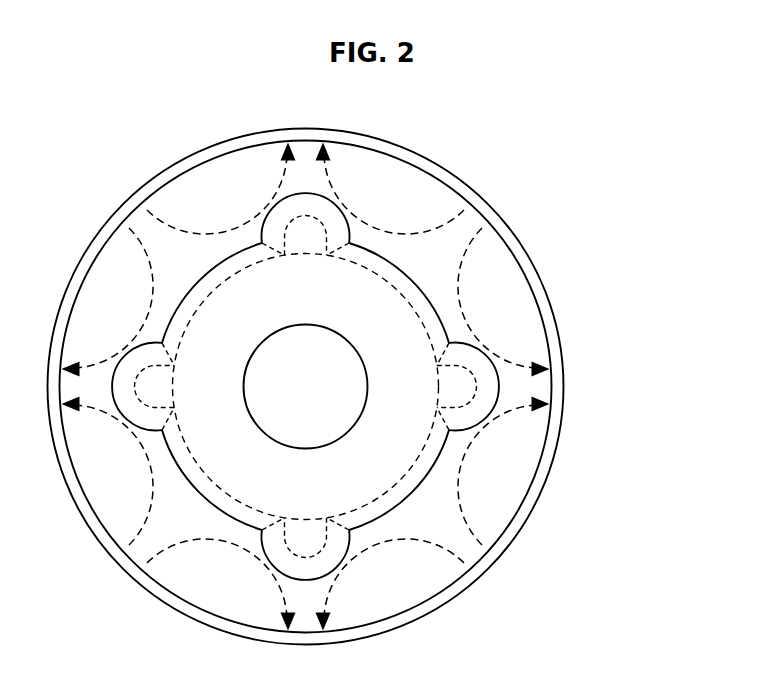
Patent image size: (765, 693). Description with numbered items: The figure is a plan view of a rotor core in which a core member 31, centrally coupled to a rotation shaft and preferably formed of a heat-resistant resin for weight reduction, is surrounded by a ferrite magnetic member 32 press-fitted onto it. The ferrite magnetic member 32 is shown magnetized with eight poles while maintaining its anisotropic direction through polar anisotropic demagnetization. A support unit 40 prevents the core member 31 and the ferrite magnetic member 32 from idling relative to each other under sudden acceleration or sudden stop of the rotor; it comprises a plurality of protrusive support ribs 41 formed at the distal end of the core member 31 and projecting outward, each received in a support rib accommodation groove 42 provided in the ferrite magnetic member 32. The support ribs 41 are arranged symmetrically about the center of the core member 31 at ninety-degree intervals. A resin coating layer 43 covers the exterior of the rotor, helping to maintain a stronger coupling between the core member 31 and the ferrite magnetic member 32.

The core member 31 is at (393, 310).
The ferrite magnetic member 32 is at (413, 195).
The support unit 40 is at (372, 387).
The support rib 41 is at (478, 357).
The support rib accommodation groove 42 is at (507, 382).
The coating layer 43 is at (640, 322).